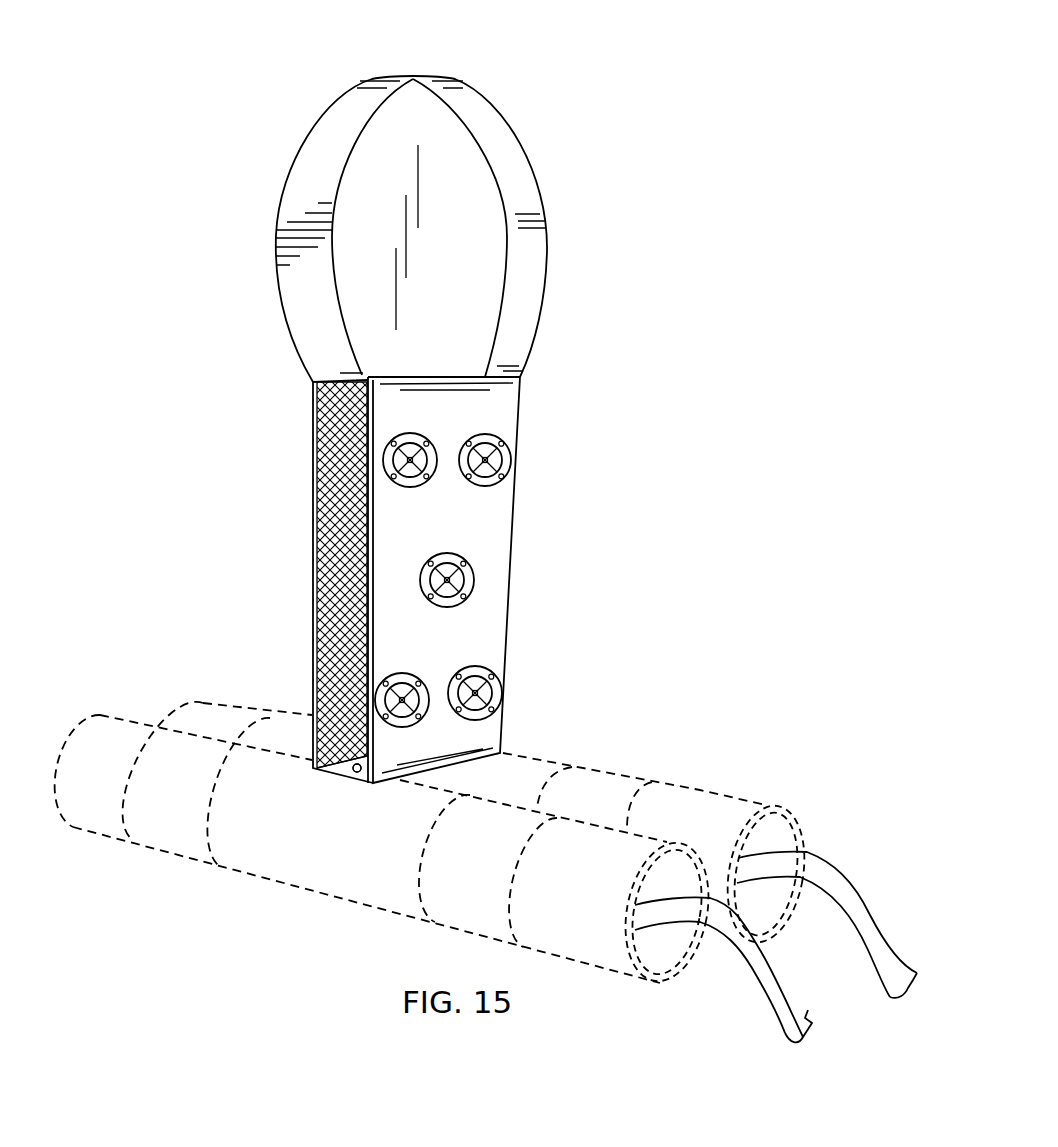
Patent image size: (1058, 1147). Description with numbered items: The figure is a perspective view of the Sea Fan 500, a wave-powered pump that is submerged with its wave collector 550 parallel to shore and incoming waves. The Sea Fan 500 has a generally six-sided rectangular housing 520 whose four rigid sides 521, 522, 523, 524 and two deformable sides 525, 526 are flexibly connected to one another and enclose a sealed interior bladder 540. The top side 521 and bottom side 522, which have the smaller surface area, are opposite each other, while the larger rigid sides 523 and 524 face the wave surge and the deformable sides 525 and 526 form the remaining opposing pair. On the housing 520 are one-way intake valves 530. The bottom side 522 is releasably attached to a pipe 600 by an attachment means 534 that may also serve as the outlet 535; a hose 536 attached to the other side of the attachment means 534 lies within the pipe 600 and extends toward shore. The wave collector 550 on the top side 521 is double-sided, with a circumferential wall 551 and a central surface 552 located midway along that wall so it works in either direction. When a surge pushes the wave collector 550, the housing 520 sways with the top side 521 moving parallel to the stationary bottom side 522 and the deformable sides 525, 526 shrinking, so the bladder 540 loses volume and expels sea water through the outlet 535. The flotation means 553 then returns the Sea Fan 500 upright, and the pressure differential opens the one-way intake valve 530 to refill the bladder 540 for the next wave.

The Sea Fan 500 is at (583, 89).
The wave collector 550 is at (395, 77).
The circumferential wall 551 is at (297, 193).
The central surface 552 is at (450, 121).
The flotation means 553 is at (527, 290).
The housing 520 is at (492, 522).
The top side 521 is at (450, 375).
The bottom side 522 is at (318, 772).
The side 523 is at (497, 562).
The side 524 is at (309, 619).
The deformable side 525 is at (325, 427).
The deformable side 526 is at (507, 608).
The one-way intake valve 530 is at (412, 441).
The attachment means 534 is at (354, 771).
The outlet 535 is at (357, 768).
The hose 536 is at (835, 858).
The bladder 540 is at (325, 568).
The pipe 600 is at (129, 840).